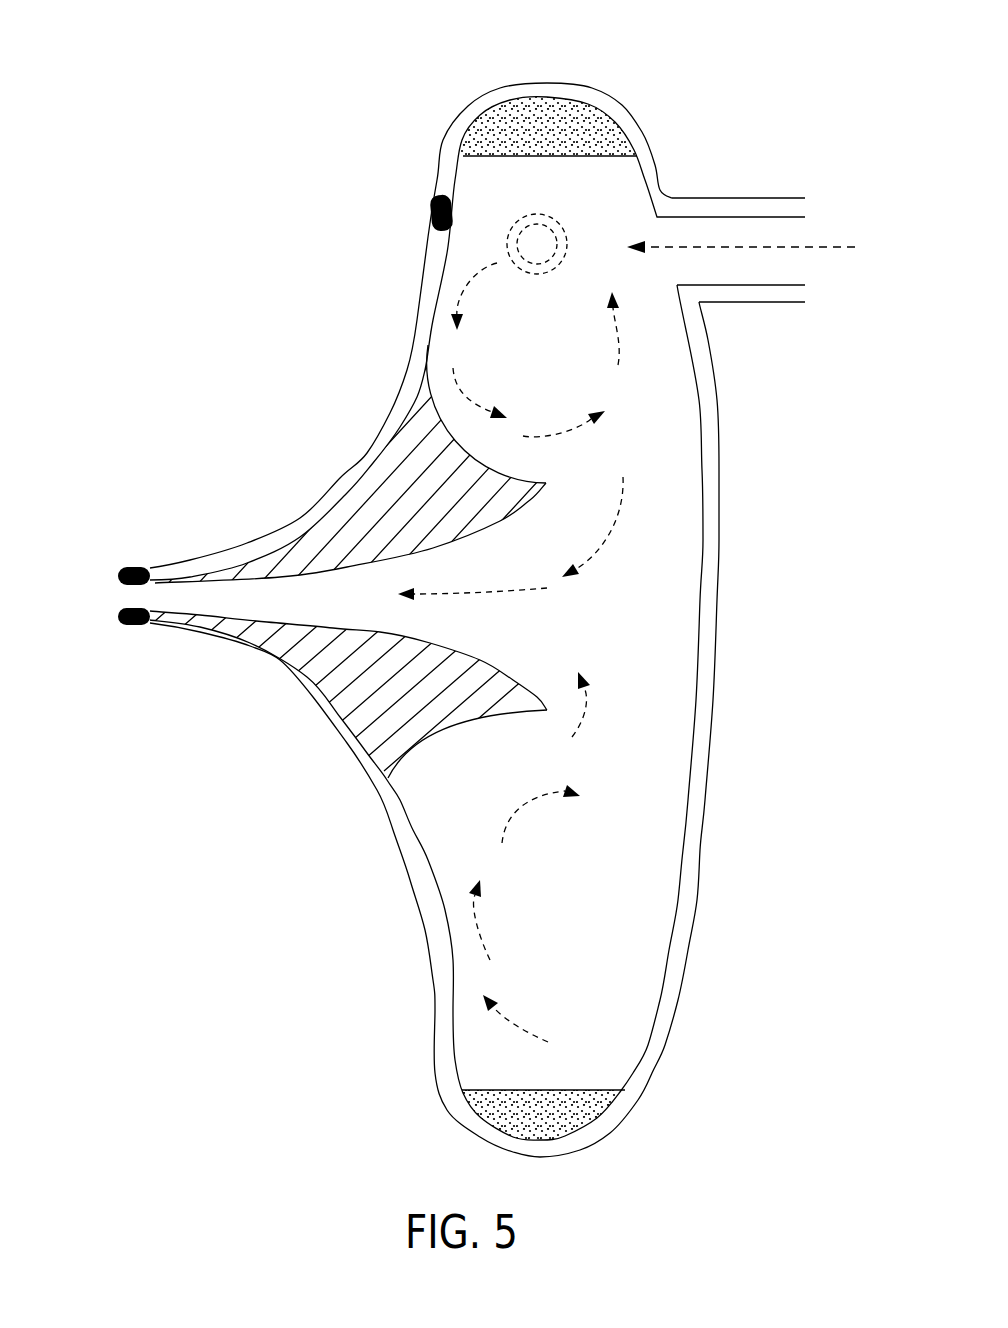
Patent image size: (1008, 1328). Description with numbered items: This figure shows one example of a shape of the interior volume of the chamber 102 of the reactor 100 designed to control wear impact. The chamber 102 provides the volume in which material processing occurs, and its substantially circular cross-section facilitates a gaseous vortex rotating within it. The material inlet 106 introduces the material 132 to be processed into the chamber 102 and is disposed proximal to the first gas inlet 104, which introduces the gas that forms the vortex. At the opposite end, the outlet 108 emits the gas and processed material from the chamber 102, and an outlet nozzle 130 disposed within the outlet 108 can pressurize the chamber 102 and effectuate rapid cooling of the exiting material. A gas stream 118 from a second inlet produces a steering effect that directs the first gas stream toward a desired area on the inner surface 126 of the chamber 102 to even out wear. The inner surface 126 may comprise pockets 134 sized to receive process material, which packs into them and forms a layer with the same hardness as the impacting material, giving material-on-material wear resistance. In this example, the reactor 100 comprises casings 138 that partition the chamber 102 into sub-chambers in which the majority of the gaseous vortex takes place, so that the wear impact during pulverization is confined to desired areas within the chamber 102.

The reactor 100 is at (786, 69).
The chamber 102 is at (720, 480).
The first gas inlet 104 is at (535, 268).
The material inlet 106 is at (748, 267).
The outlet 108 is at (173, 598).
The gas stream 118 is at (432, 207).
The inner surface 126 is at (697, 717).
The outlet nozzle 130 is at (118, 616).
The material 132 is at (818, 252).
The pockets 134 is at (570, 123).
The casings 138 is at (327, 527).